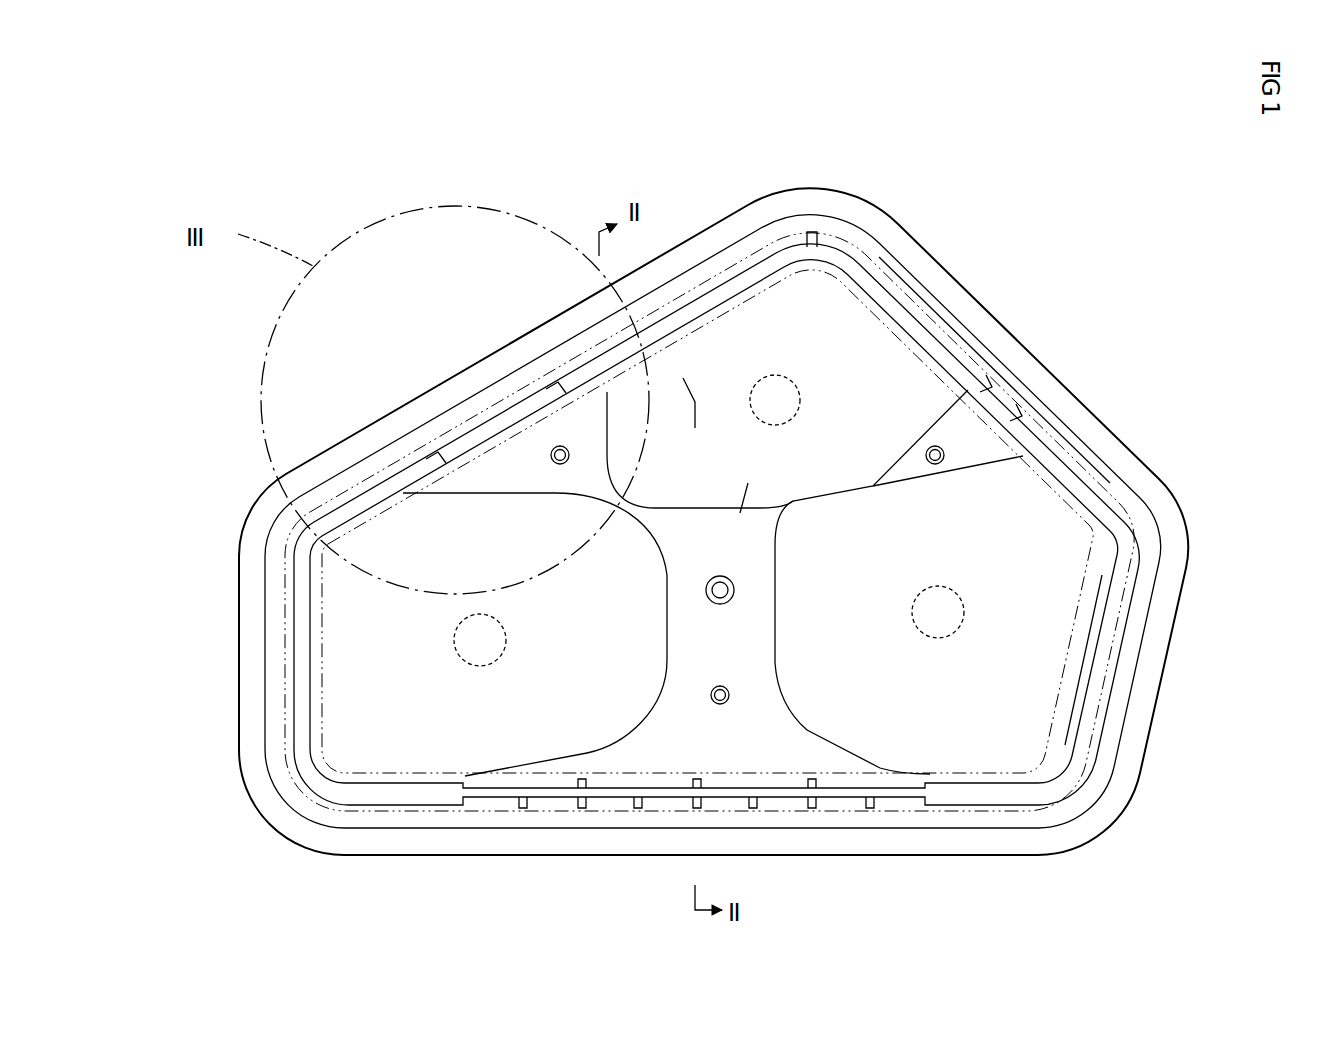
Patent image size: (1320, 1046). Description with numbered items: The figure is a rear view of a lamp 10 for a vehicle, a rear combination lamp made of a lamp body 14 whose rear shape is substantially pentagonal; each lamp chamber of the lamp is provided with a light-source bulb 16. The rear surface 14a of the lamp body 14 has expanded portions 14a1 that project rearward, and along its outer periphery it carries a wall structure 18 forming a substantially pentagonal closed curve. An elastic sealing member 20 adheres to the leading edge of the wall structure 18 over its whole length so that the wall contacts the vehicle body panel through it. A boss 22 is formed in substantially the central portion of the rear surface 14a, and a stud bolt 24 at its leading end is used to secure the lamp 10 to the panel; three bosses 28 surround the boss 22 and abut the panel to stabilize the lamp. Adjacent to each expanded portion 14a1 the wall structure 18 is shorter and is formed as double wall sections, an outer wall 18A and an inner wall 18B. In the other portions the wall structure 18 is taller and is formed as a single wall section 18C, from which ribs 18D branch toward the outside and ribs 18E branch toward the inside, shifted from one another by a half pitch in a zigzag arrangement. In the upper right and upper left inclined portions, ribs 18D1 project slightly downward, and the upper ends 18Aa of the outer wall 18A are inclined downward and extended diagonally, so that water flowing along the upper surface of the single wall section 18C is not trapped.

The lamp for a vehicle 10 is at (1100, 290).
The lamp body 14 is at (1192, 622).
The rear surface 14a is at (670, 748).
The expanded portion 14a1 is at (802, 550).
The light-source bulb 16 is at (800, 406).
The wall structure 18 is at (1130, 510).
The outer wall 18A is at (618, 330).
The upper ends of the outer wall 18Aa is at (745, 260).
The inner wall 18B is at (668, 338).
The single wall section 18C is at (800, 247).
The outside ribs 18D is at (817, 236).
The downward-projecting ribs 18D1 is at (1022, 403).
The inside ribs 18E is at (854, 283).
The elastic sealing member 20 is at (895, 815).
The boss 22 is at (706, 593).
The stud bolt 24 is at (735, 590).
The bosses 28 is at (569, 456).